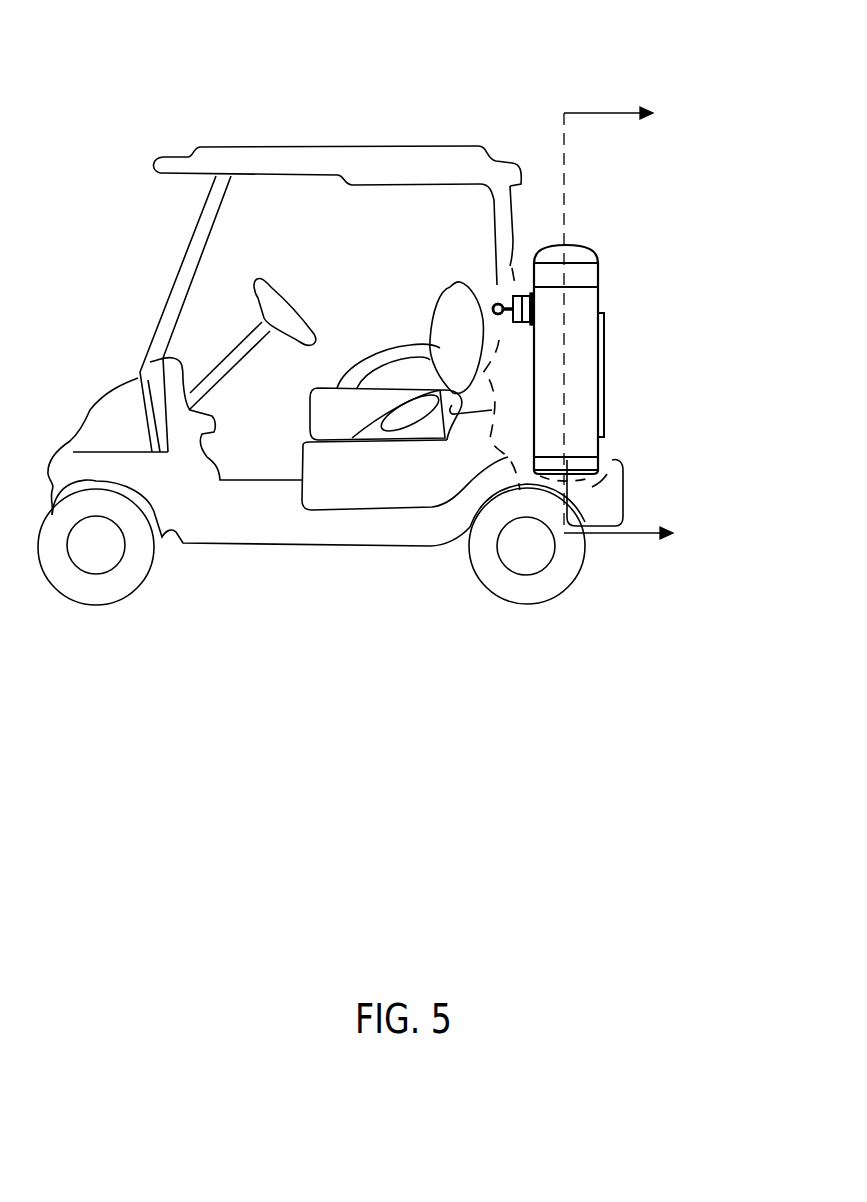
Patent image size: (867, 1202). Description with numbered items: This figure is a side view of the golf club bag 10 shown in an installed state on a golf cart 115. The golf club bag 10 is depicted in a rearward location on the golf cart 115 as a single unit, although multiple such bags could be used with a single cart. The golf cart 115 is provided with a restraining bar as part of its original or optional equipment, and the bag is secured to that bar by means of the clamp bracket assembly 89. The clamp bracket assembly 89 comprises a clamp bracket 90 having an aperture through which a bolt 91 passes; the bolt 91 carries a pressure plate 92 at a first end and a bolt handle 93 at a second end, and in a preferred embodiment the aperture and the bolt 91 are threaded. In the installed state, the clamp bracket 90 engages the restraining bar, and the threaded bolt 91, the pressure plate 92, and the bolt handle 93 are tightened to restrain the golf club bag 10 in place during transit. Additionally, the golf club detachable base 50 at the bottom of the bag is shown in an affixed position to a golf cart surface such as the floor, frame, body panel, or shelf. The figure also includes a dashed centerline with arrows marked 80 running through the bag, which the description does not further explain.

The golf club bag 10 is at (72, 130).
The golf club detachable base 50 is at (603, 438).
The vertical axis 80 is at (553, 245).
The clamp bracket assembly 89 is at (470, 301).
The clamp bracket 90 is at (510, 298).
The bolt 91 is at (510, 298).
The pressure plate 92 is at (510, 298).
The bolt handle 93 is at (510, 298).
The golf cart 115 is at (306, 145).